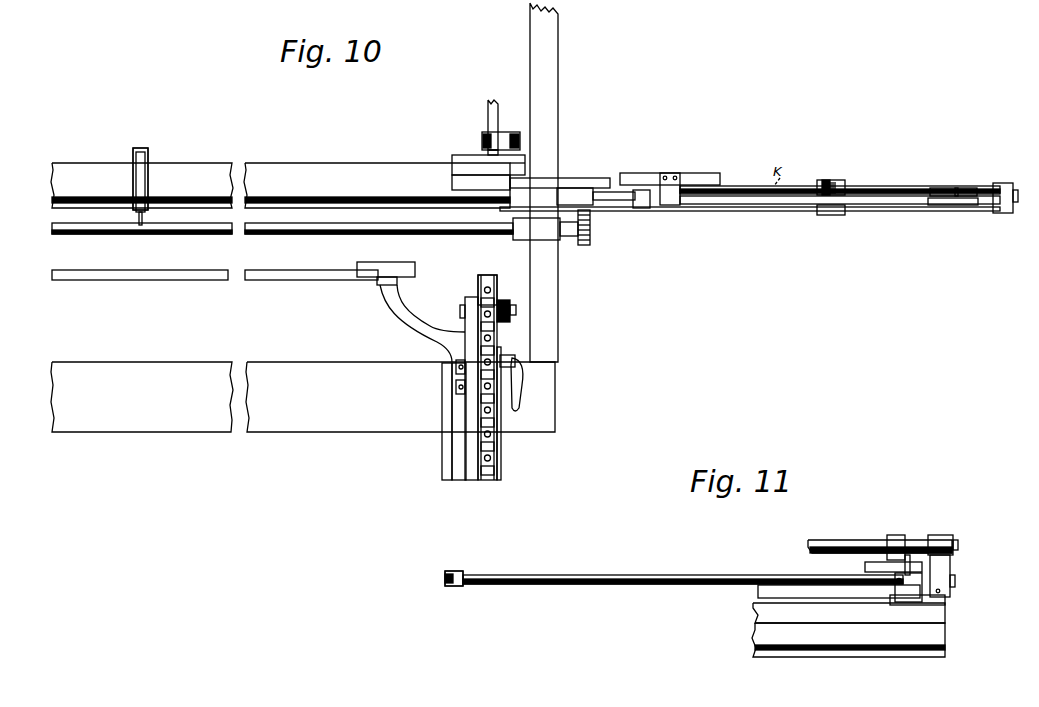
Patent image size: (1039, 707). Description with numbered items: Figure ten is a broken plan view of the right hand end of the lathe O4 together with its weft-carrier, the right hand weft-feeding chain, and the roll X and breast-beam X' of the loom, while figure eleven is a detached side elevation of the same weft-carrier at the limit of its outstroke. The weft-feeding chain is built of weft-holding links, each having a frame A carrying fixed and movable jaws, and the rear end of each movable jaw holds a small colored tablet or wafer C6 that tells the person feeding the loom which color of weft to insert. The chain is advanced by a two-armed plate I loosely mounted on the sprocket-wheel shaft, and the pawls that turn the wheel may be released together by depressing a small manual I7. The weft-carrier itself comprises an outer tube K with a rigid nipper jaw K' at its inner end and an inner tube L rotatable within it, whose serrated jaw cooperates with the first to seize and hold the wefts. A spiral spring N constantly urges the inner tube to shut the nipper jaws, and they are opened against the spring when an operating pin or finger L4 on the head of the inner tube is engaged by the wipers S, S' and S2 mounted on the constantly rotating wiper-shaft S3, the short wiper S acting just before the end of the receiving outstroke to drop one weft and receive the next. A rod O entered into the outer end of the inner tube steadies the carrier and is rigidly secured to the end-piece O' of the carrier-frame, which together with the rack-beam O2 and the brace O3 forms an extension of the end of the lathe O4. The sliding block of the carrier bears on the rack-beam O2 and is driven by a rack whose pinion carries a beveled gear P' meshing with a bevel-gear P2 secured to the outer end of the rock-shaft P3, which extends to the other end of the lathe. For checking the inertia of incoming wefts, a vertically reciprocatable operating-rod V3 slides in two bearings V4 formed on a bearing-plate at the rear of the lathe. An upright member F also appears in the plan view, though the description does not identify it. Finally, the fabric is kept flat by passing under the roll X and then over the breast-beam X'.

In FIG. 10, the lathe O4 is at (288, 181).
In FIG. 10, the frame post F is at (558, 103).
In FIG. 10, the operating-rod V3 is at (145, 150).
In FIG. 10, the bearings V4 is at (155, 174).
In FIG. 10, the rock-shaft P3 is at (470, 218).
In FIG. 10, the beveled gear P' is at (585, 226).
In FIG. 10, the bevel-gear P2 is at (595, 229).
In FIG. 10, the wiper S2 is at (670, 176).
In FIG. 10, the wiper-shaft S3 is at (840, 176).
In FIG. 11, the wiper-shaft S3 is at (880, 533).
In FIG. 10, the wiper S' is at (750, 223).
In FIG. 11, the short wiper S is at (887, 546).
In FIG. 10, the outer tube K is at (520, 307).
In FIG. 11, the outer tube K is at (683, 570).
In FIG. 11, the nipper jaw K' is at (436, 581).
In FIG. 10, the spiral spring N is at (831, 184).
In FIG. 11, the spiral spring N is at (876, 567).
In FIG. 10, the rod O is at (930, 184).
In FIG. 11, the rod O is at (927, 580).
In FIG. 10, the end-piece O' is at (1004, 211).
In FIG. 11, the end-piece O' is at (963, 564).
In FIG. 11, the rack-beam O2 is at (849, 604).
In FIG. 11, the brace O3 is at (848, 640).
In FIG. 10, the roll X is at (233, 270).
In FIG. 10, the breast-beam X' is at (303, 397).
In FIG. 10, the frame A is at (489, 388).
In FIG. 10, the two-armed plate I is at (494, 377).
In FIG. 10, the colored tablet C6 is at (475, 287).
In FIG. 10, the manual I7 is at (522, 383).
In FIG. 11, the inner tube L is at (438, 570).
In FIG. 11, the operating pin L4 is at (938, 554).